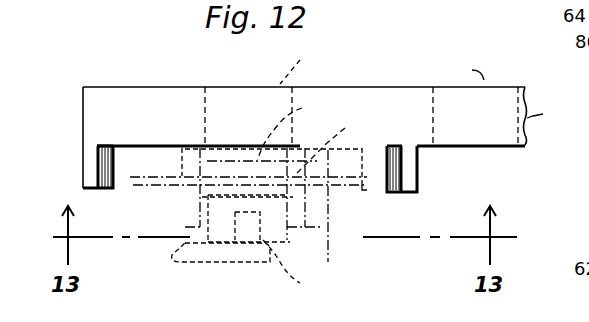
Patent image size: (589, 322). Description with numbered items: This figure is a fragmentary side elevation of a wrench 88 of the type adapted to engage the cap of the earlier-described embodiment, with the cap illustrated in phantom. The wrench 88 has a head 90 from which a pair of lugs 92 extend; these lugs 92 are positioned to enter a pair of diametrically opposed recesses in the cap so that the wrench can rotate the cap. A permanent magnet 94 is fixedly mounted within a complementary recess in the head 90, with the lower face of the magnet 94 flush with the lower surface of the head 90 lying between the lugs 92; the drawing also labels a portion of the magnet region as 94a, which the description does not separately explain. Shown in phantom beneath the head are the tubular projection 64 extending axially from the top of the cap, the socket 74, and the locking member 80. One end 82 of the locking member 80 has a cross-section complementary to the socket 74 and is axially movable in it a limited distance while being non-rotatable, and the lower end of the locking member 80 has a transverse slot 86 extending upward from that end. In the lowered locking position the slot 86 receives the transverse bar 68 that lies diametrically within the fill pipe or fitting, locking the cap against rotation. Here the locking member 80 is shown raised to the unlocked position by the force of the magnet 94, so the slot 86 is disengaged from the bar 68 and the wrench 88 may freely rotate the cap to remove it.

The head 90 is at (163, 87).
The lugs 92 is at (83, 170).
The permanent magnet 94 is at (300, 68).
The opening portion 94a is at (457, 71).
The wrench 88 is at (548, 115).
The end of locking member 82 is at (296, 129).
The socket 74 is at (337, 145).
The tubular projection 64 is at (330, 259).
The transverse bar 68 is at (247, 258).
The locking member 80 is at (232, 268).
The transverse slot 86 is at (297, 270).